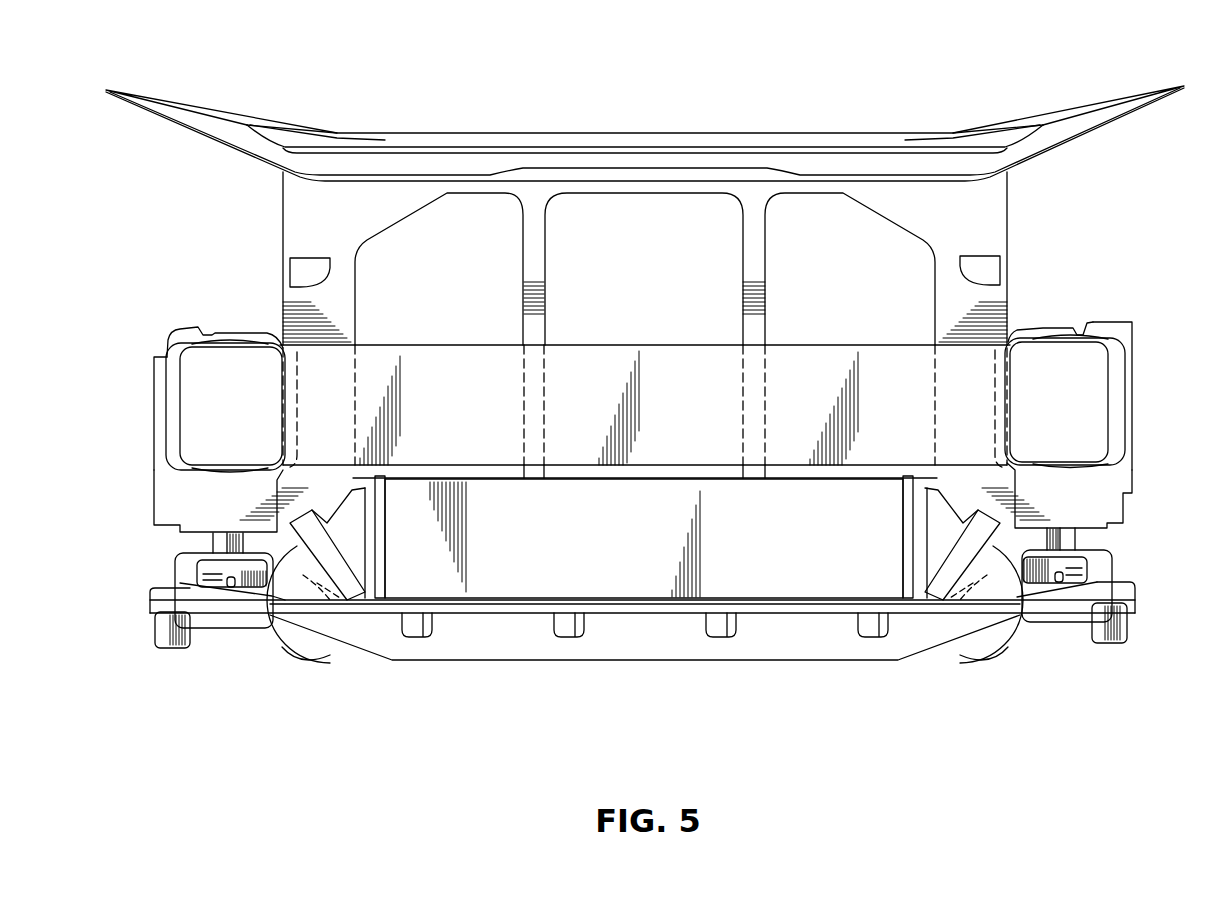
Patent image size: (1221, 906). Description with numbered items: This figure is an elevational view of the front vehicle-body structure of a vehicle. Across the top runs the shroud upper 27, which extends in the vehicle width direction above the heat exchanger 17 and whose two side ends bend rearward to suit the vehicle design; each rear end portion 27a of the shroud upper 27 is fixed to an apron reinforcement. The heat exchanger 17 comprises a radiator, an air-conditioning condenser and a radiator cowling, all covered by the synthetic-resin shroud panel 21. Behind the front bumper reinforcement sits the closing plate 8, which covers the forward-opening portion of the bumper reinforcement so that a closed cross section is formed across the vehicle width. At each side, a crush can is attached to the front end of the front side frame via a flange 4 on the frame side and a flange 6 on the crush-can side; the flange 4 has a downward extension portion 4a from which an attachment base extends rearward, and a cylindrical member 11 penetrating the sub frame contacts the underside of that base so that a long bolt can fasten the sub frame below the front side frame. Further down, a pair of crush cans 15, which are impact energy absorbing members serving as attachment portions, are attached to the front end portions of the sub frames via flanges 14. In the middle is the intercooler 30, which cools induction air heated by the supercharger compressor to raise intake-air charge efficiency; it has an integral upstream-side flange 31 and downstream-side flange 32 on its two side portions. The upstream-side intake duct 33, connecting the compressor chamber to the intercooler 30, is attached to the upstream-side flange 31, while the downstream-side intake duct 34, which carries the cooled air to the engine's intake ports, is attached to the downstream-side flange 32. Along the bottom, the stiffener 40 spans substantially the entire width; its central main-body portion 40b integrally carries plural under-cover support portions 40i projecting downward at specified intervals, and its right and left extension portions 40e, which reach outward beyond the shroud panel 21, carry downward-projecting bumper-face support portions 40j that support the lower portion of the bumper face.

The shroud upper 27 is at (651, 132).
The rear end portion of the shroud upper 27a is at (155, 91).
The heat exchanger 17 is at (281, 212).
The shroud panel 21 is at (295, 241).
The closing plate 8 is at (670, 414).
The flange 4 is at (153, 374).
The extension portion 4a is at (153, 500).
The flange 6 is at (165, 410).
The cylindrical member 11 is at (213, 545).
The flange 14 is at (175, 570).
The crush can 15 is at (223, 567).
The stiffener 40 is at (513, 600).
The main-body portion 40b is at (723, 607).
The extension portion 40e is at (150, 601).
The under-cover support portion 40i is at (417, 640).
The bumper-face support portion 40j is at (155, 637).
The intercooler 30 is at (607, 537).
The upstream-side flange 31 is at (316, 545).
The downstream-side flange 32 is at (977, 538).
The upstream-side intake duct 33 is at (282, 657).
The downstream-side intake duct 34 is at (993, 648).